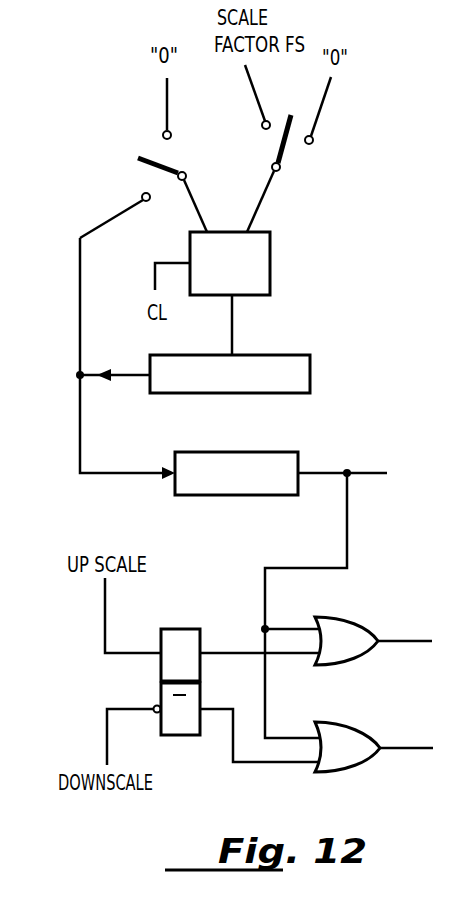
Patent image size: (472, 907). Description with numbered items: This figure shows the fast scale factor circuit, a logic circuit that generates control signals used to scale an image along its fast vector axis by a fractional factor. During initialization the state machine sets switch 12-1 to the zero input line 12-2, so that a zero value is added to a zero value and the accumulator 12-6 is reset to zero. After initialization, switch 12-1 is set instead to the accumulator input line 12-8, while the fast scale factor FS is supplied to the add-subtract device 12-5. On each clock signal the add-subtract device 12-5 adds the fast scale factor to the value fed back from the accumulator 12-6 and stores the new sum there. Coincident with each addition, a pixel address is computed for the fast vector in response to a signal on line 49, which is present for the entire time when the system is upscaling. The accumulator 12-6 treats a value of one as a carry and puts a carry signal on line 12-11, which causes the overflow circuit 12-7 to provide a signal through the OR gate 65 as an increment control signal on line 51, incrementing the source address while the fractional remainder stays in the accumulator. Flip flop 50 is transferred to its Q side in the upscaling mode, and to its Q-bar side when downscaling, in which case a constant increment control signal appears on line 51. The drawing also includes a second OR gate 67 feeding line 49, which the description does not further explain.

The switch 12-1 is at (145, 173).
The "0" input line 12-2 is at (167, 102).
The add-subtract device 12-5 is at (262, 257).
The accumulator 12-6 is at (305, 362).
The overflow circuit 12-7 is at (285, 458).
The accumulator input line 12-8 is at (143, 205).
The carry signal line 12-11 is at (80, 412).
The line 49 is at (398, 641).
The flip flop 50 is at (192, 735).
The line 51 is at (403, 747).
The OR gate 65 is at (360, 768).
The OR gate 67 is at (348, 618).